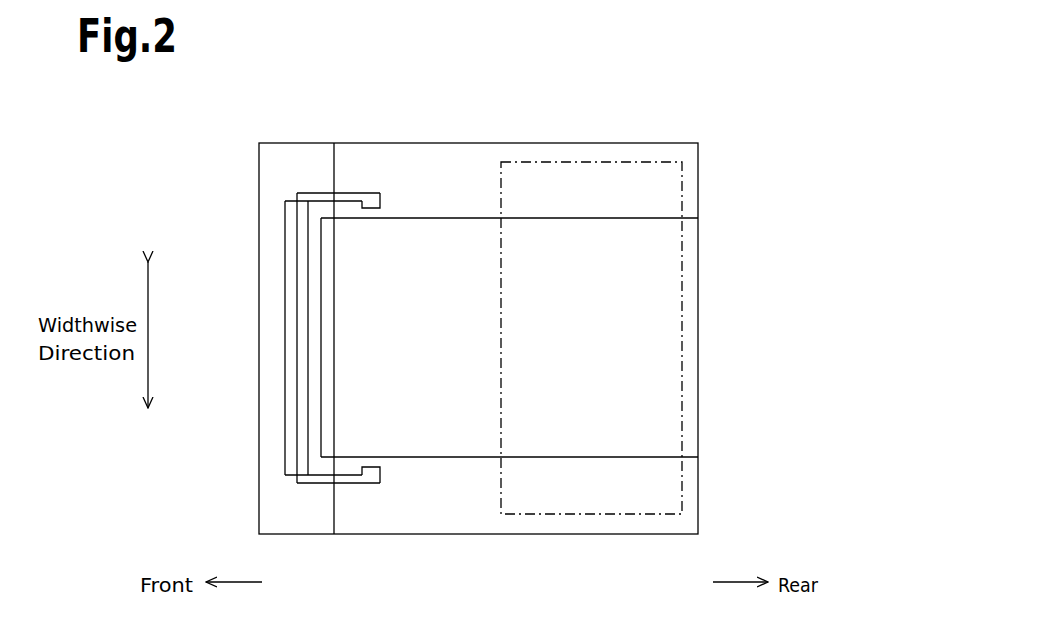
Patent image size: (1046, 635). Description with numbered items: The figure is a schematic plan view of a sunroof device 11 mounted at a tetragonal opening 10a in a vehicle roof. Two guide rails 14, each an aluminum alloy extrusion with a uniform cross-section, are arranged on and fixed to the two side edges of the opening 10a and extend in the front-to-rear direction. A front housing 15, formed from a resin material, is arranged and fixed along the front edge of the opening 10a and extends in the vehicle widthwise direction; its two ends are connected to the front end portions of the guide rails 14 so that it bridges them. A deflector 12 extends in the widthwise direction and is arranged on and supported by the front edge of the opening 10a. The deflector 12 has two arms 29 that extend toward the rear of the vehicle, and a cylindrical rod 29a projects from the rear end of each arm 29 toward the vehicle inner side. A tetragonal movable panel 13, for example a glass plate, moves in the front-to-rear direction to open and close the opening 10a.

The sunroof device 11 is at (664, 113).
The deflector 12 is at (284, 264).
The movable panel 13 is at (683, 337).
The guide rail 14 is at (437, 143).
The front housing 15 is at (259, 349).
The arm 29 is at (322, 192).
The rod 29a is at (367, 210).
The opening 10a is at (462, 344).